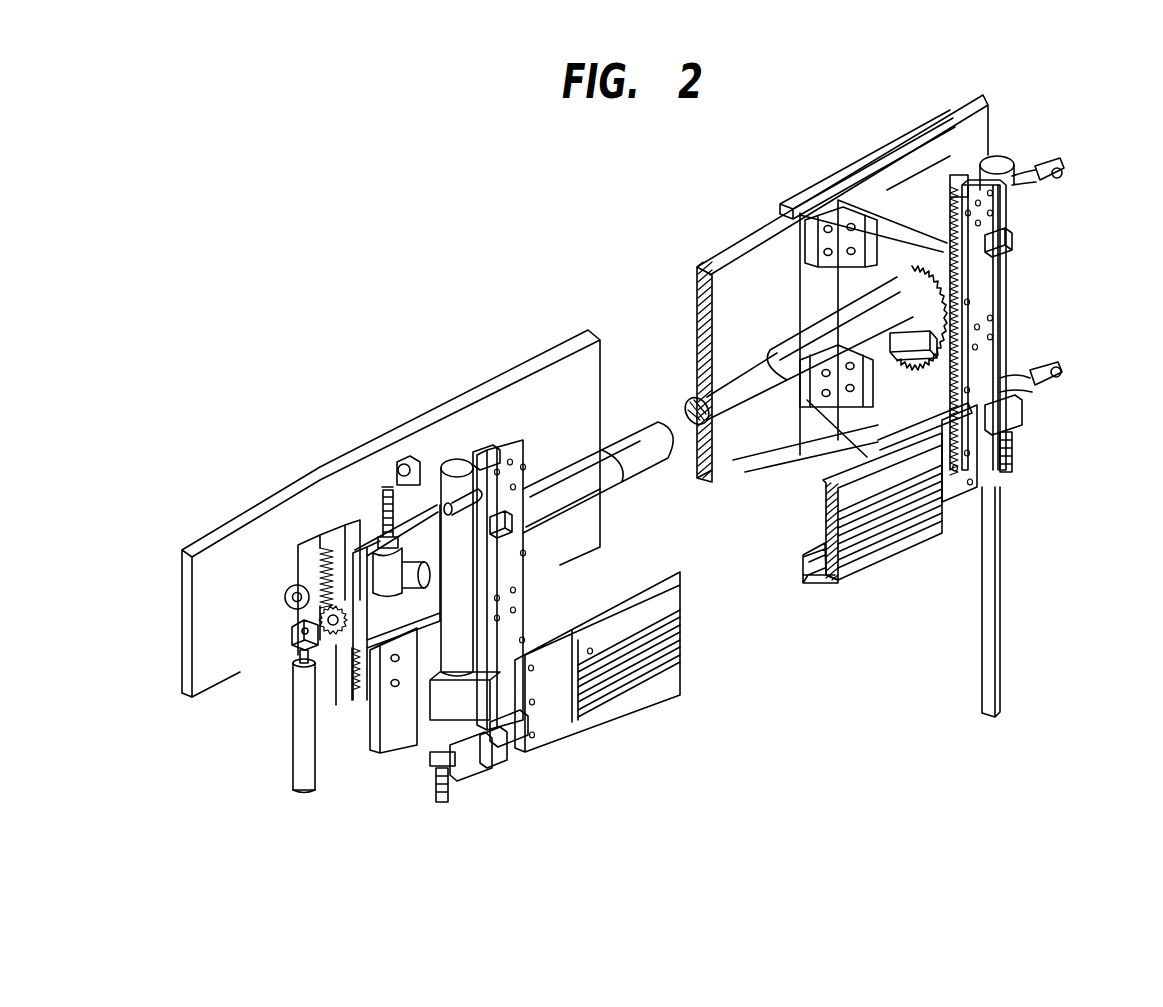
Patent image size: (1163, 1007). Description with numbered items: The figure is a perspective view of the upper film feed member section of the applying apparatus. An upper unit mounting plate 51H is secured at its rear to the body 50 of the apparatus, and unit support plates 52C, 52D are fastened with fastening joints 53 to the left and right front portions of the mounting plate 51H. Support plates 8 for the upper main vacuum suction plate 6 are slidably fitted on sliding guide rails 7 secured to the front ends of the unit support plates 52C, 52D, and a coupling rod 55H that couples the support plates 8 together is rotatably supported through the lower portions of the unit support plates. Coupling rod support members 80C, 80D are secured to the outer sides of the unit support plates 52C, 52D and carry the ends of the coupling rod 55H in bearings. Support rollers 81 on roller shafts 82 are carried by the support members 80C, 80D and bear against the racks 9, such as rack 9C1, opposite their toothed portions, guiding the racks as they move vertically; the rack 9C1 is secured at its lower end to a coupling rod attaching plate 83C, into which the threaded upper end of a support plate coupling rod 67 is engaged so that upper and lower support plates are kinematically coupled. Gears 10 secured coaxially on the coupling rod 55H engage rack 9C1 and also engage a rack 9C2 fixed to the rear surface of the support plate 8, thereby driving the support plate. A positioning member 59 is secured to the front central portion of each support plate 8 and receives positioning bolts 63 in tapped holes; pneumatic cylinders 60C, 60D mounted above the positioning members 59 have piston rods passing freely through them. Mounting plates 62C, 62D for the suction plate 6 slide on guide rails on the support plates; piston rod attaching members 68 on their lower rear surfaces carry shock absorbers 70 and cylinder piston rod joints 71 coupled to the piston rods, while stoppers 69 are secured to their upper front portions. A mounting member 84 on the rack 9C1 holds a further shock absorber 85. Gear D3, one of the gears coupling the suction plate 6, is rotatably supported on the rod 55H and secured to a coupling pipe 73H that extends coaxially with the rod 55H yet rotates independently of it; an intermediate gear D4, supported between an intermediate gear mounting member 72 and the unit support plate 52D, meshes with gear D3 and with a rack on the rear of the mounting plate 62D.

The body 50 is at (232, 527).
The upper unit mounting plate 51H is at (565, 347).
The coupling rod support member 80D is at (912, 200).
The unit support plate 52D is at (883, 215).
The fastening joint 53 is at (823, 217).
The main vacuum suction plate kinematic coupling gear D3 is at (887, 273).
The intermediate gear D4 is at (923, 370).
The intermediate gear mounting member 72 is at (943, 340).
The rack 9 is at (959, 325).
The mounting plate 62D is at (985, 302).
The pneumatic cylinder 60D is at (1003, 272).
The sliding guide rail 7 is at (988, 150).
The stopper 69 is at (1010, 237).
The positioning bolt 63 is at (1010, 442).
The cylinder piston rod attaching member 68 is at (1010, 450).
The shock absorber 70 is at (1003, 473).
The support plate coupling rod 67 is at (995, 613).
The main vacuum suction plate 6 is at (857, 570).
The main vacuum suction plate coupling pipe 73H is at (798, 400).
The support plate coupling rod 55H is at (722, 425).
The pneumatic cylinder 60C is at (457, 460).
The mounting plate 62C is at (512, 598).
The shock absorber 85 is at (385, 486).
The unit support plate 52C is at (368, 470).
The mounting member 84 is at (337, 540).
The coupling rod support member 80C is at (302, 547).
The rack 9C1 is at (313, 558).
The support roller 81 is at (284, 592).
The roller shaft 82 is at (293, 607).
The coupling rod attaching plate 83C is at (292, 640).
The support plate drive gear 10 is at (242, 672).
The rack 9C2 is at (352, 692).
The positioning member 59 is at (417, 722).
The support plate 8 is at (373, 728).
The cylinder piston rod joint 71 is at (497, 760).